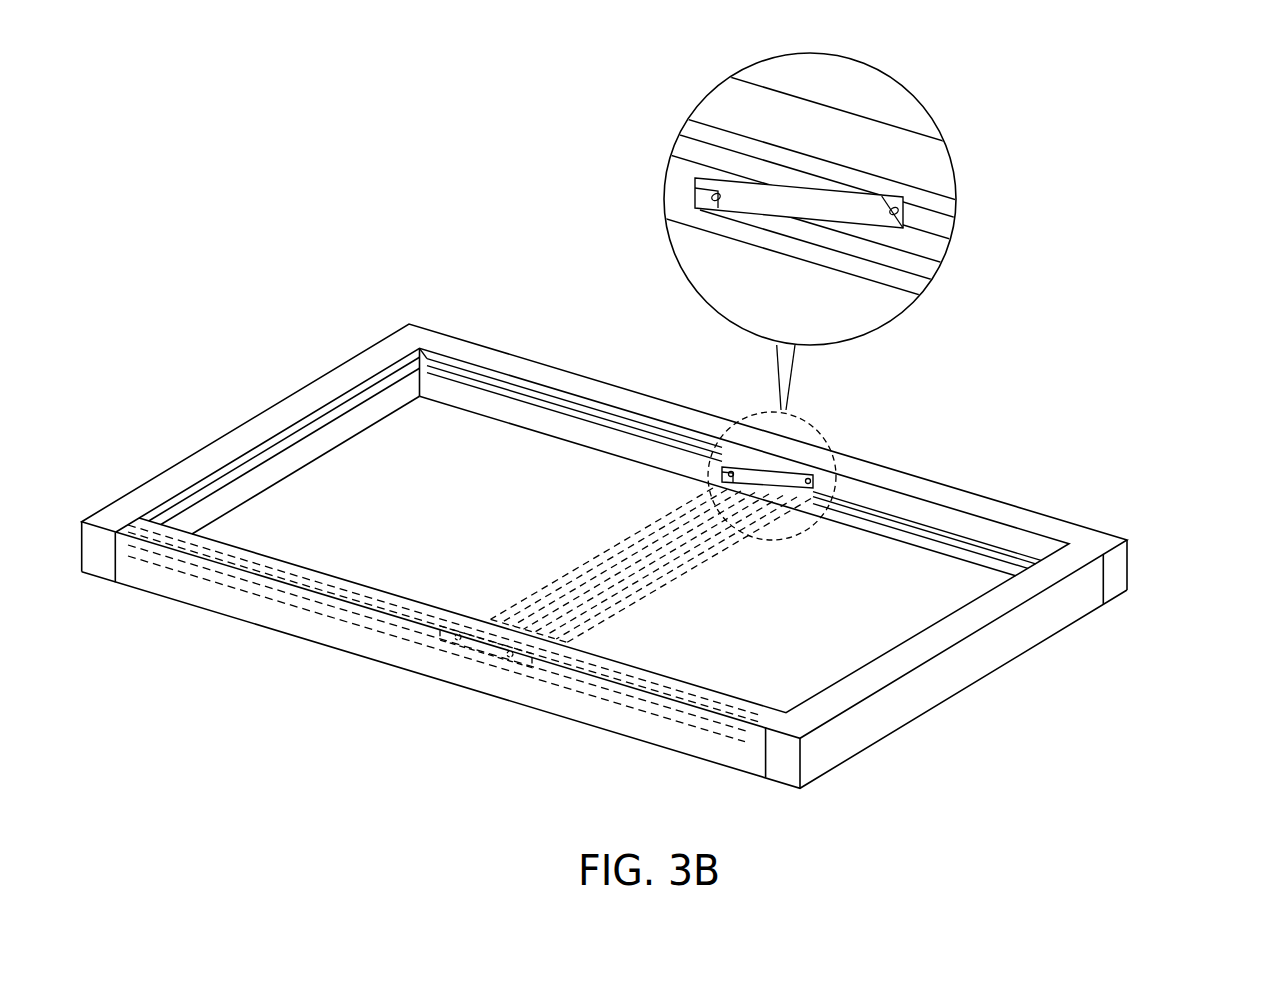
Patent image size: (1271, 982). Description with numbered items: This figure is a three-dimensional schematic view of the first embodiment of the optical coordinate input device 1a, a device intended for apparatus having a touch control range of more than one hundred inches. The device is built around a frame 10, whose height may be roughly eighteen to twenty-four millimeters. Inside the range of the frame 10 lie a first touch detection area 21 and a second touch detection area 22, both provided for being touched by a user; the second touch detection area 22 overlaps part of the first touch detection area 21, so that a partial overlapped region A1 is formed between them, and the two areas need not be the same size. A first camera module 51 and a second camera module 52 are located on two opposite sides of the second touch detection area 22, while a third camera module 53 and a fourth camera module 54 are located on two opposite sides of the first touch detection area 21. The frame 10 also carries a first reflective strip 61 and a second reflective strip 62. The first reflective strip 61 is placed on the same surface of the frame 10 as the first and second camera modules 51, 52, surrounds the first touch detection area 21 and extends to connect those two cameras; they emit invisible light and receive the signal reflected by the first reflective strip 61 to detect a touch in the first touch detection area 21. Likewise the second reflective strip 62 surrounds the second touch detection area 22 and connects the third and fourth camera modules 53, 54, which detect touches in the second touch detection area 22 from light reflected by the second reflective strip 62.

The optical coordinate input device 1a is at (1168, 180).
The frame 10 is at (1098, 538).
The first touch detection area 21 is at (655, 664).
The second touch detection area 22 is at (290, 550).
The first camera module 51 is at (722, 481).
The second camera module 52 is at (440, 650).
The third camera module 53 is at (814, 477).
The fourth camera module 54 is at (505, 666).
The first reflective strip 61 is at (914, 540).
The second reflective strip 62 is at (622, 426).
The partial overlapped region A1 is at (690, 580).